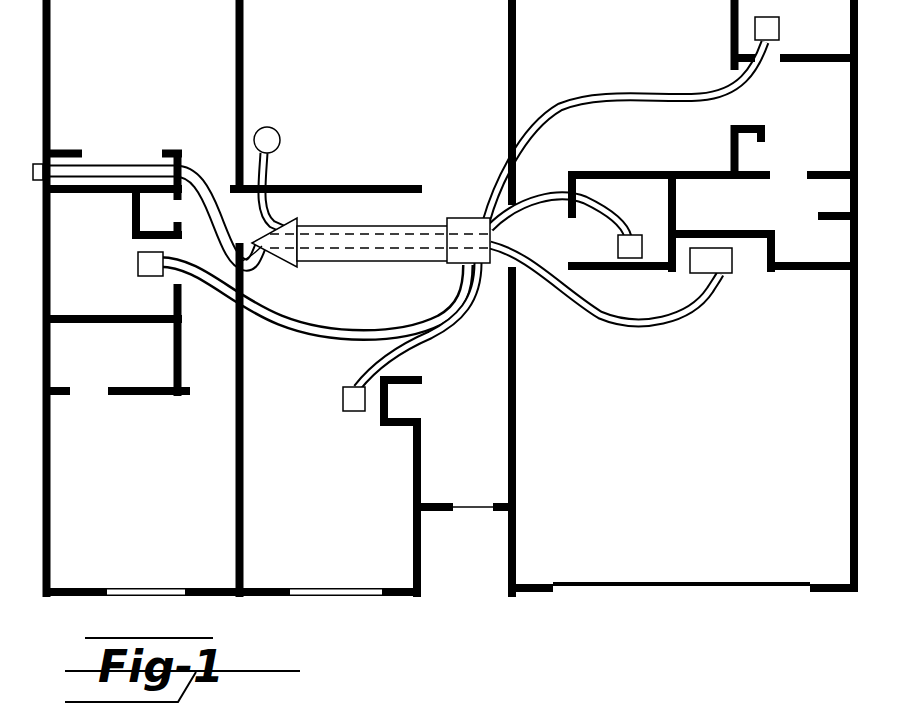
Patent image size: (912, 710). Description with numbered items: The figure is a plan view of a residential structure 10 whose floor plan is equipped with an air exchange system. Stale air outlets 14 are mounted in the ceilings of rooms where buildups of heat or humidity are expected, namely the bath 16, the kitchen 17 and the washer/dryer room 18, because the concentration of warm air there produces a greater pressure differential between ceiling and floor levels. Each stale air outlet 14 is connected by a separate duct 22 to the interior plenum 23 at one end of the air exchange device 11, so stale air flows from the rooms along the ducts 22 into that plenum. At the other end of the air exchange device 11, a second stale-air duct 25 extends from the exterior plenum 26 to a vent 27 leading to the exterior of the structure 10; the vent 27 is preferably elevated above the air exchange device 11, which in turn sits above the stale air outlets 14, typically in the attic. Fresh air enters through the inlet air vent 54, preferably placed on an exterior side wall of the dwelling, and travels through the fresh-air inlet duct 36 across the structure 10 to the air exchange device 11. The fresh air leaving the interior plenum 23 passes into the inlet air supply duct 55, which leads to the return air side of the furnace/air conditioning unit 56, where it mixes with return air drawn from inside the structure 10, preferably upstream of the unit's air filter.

The residential structure 10 is at (470, 632).
The air exchange device 11 is at (425, 209).
The stale air outlet 14 is at (150, 277).
The bath 16 is at (110, 266).
The kitchen 17 is at (347, 505).
The washer/dryer room 18 is at (640, 205).
The duct 22 is at (203, 280).
The interior plenum 23 is at (449, 217).
The second stale-air duct 25 is at (280, 211).
The exterior plenum 26 is at (283, 264).
The vent 27 is at (280, 137).
The fresh-air inlet duct 36 is at (118, 164).
The inlet air vent 54 is at (35, 172).
The inlet air supply duct 55 is at (560, 287).
The furnace/air conditioning unit 56 is at (722, 275).